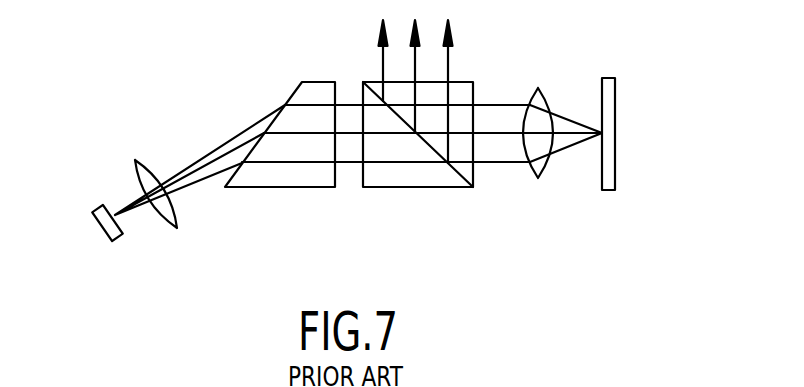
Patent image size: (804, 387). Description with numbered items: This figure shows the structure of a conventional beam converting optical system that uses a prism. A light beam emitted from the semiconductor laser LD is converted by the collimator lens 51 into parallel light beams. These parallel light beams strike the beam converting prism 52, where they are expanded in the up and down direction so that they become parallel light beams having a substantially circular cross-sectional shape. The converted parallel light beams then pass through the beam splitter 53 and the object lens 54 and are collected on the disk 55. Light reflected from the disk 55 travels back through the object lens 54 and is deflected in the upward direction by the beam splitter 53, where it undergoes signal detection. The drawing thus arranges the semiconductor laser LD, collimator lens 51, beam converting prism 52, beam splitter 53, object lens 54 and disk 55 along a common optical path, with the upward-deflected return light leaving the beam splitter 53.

The semiconductor laser LD is at (118, 243).
The collimator lens 51 is at (137, 160).
The beam converting prism 52 is at (320, 82).
The beam splitter 53 is at (380, 180).
The object lens 54 is at (535, 178).
The disk 55 is at (605, 77).